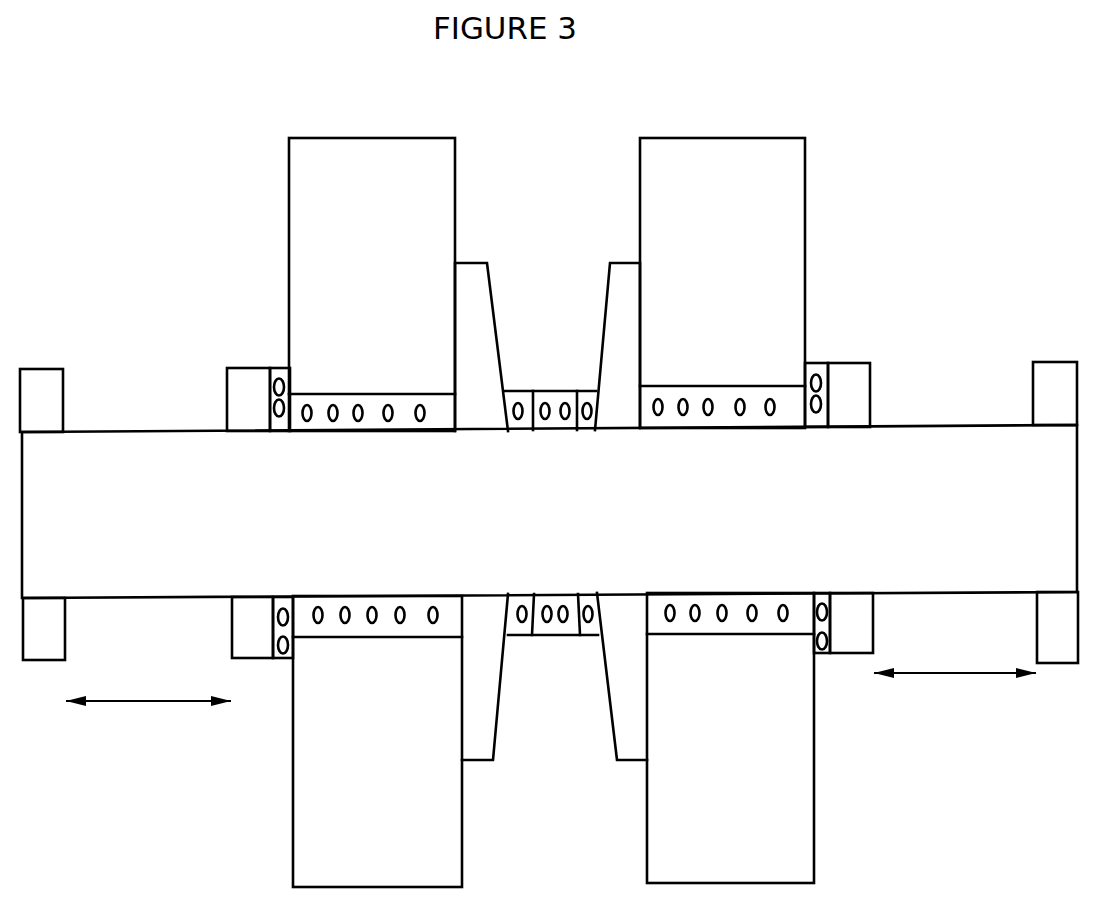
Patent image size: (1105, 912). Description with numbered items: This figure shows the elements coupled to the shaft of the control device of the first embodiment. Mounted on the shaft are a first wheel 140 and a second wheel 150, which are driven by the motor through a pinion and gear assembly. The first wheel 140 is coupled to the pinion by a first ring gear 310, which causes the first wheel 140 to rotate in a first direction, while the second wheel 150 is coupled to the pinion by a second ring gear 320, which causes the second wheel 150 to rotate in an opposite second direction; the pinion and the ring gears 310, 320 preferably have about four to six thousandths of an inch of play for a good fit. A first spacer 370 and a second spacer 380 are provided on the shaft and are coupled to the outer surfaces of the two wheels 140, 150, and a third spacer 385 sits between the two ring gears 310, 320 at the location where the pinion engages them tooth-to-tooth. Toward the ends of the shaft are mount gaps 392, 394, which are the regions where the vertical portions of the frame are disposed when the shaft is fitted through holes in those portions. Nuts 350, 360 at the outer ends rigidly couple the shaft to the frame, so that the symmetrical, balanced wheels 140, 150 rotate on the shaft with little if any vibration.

The first wheel 140 is at (285, 217).
The second wheel 150 is at (809, 192).
The first ring gear 310 is at (489, 256).
The second ring gear 320 is at (606, 268).
The nut 350 is at (43, 364).
The nut 360 is at (1052, 350).
The first spacer 370 is at (225, 365).
The second spacer 380 is at (849, 359).
The third spacer 385 is at (557, 641).
The mount gap 392 is at (147, 707).
The mount gap 394 is at (1016, 679).